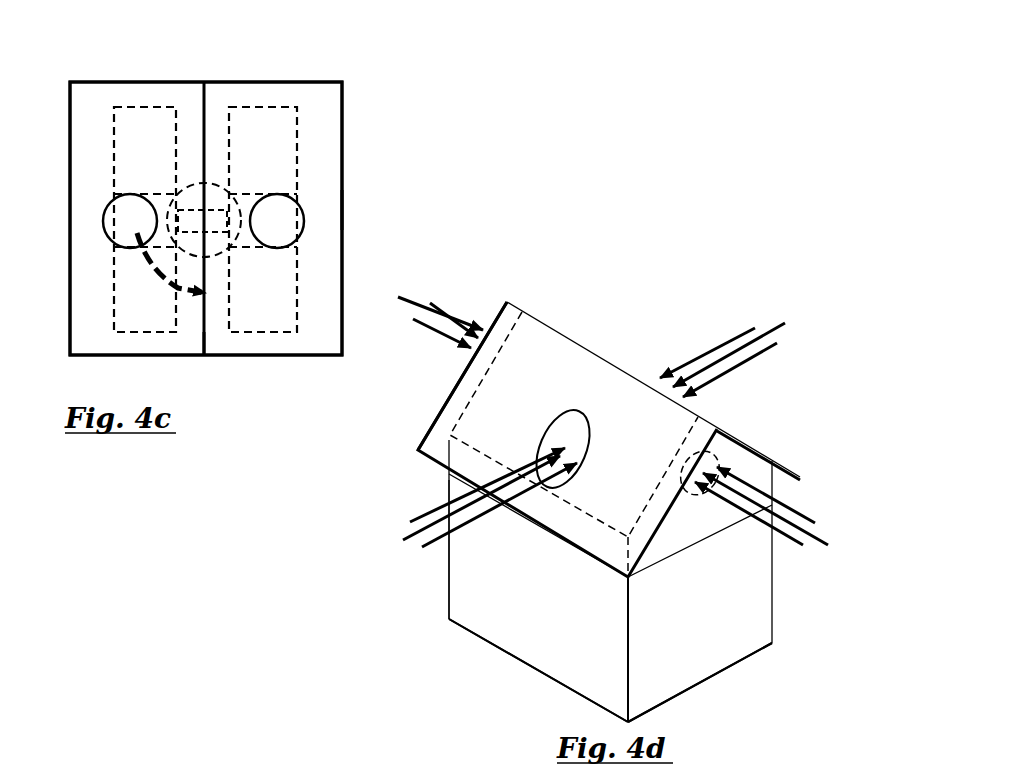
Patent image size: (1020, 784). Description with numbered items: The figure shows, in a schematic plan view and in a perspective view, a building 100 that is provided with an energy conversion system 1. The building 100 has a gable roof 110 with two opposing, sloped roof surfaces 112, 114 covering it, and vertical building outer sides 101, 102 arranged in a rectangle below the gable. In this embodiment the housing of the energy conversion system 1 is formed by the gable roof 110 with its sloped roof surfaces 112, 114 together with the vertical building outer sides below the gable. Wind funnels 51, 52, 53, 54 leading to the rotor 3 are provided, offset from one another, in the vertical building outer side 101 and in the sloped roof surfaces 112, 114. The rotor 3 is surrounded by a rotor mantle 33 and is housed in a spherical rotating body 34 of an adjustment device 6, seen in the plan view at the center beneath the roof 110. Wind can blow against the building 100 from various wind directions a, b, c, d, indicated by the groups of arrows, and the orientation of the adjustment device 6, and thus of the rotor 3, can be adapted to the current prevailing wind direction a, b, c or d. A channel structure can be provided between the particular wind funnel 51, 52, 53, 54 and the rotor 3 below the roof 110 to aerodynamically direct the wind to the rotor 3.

In FIG. 4C, the energy conversion system 1 is at (244, 274).
In FIG. 4D, the energy conversion system 1 is at (594, 384).
In FIG. 4C, the rotor 3 is at (185, 223).
In FIG. 4C, the adjustment device 6 is at (157, 273).
In FIG. 4C, the rotor mantle 33 is at (173, 220).
In FIG. 4C, the spherical rotating body 34 is at (167, 203).
In FIG. 4C, the wind funnel 51 is at (213, 340).
In FIG. 4D, the wind funnel 51 is at (731, 461).
In FIG. 4C, the wind funnel 52 is at (107, 197).
In FIG. 4D, the wind funnel 52 is at (538, 432).
In FIG. 4C, the wind funnel 53 is at (192, 102).
In FIG. 4C, the wind funnel 54 is at (302, 205).
In FIG. 4C, the building 100 is at (367, 208).
In FIG. 4D, the building 100 is at (435, 593).
In FIG. 4D, the vertical building outer side 101 is at (701, 631).
In FIG. 4D, the vertical building outer side 102 is at (558, 624).
In FIG. 4C, the gable roof 110 is at (322, 82).
In FIG. 4C, the sloped roof surface 112 is at (97, 107).
In FIG. 4D, the sloped roof surface 112 is at (553, 398).
In FIG. 4C, the sloped roof surface 114 is at (316, 107).
In FIG. 4D, the wind direction a is at (777, 499).
In FIG. 4D, the wind direction b is at (432, 509).
In FIG. 4D, the wind direction c is at (452, 311).
In FIG. 4D, the wind direction d is at (705, 350).